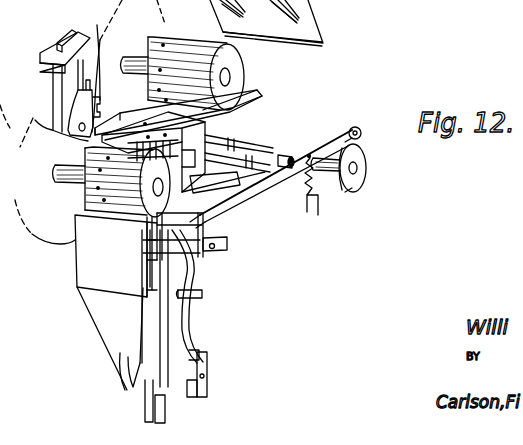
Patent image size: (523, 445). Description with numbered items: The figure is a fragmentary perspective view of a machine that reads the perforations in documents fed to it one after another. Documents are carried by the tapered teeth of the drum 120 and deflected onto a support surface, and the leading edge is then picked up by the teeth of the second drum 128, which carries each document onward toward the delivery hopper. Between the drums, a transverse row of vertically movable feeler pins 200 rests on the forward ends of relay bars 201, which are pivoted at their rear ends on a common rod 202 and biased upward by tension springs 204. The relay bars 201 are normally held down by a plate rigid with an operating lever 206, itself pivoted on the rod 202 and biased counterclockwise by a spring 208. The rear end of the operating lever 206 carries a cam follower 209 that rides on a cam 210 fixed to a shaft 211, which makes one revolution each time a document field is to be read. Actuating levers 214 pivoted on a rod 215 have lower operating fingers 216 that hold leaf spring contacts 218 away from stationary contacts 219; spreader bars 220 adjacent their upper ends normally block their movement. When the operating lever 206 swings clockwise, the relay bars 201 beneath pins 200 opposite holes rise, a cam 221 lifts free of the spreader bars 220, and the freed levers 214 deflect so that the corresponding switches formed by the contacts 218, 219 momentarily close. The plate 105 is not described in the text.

The drum 120 is at (200, 73).
The second drum 128 is at (128, 177).
The feeler pins 200 is at (190, 142).
The tension springs 204 is at (230, 150).
The relay bars 201 is at (248, 160).
The plate 105 is at (223, 182).
The rod 202 is at (287, 170).
The operating lever 206 is at (260, 188).
The spring 208 is at (322, 197).
The cam follower 209 is at (355, 127).
The cam 210 is at (368, 176).
The shaft 211 is at (333, 170).
The cam 221 is at (210, 233).
The spreader bars 220 is at (212, 252).
The actuating levers 214 is at (187, 277).
The rod 215 is at (200, 295).
The operating fingers 216 is at (194, 357).
The leaf spring contacts 218 is at (208, 374).
The stationary contacts 219 is at (182, 398).